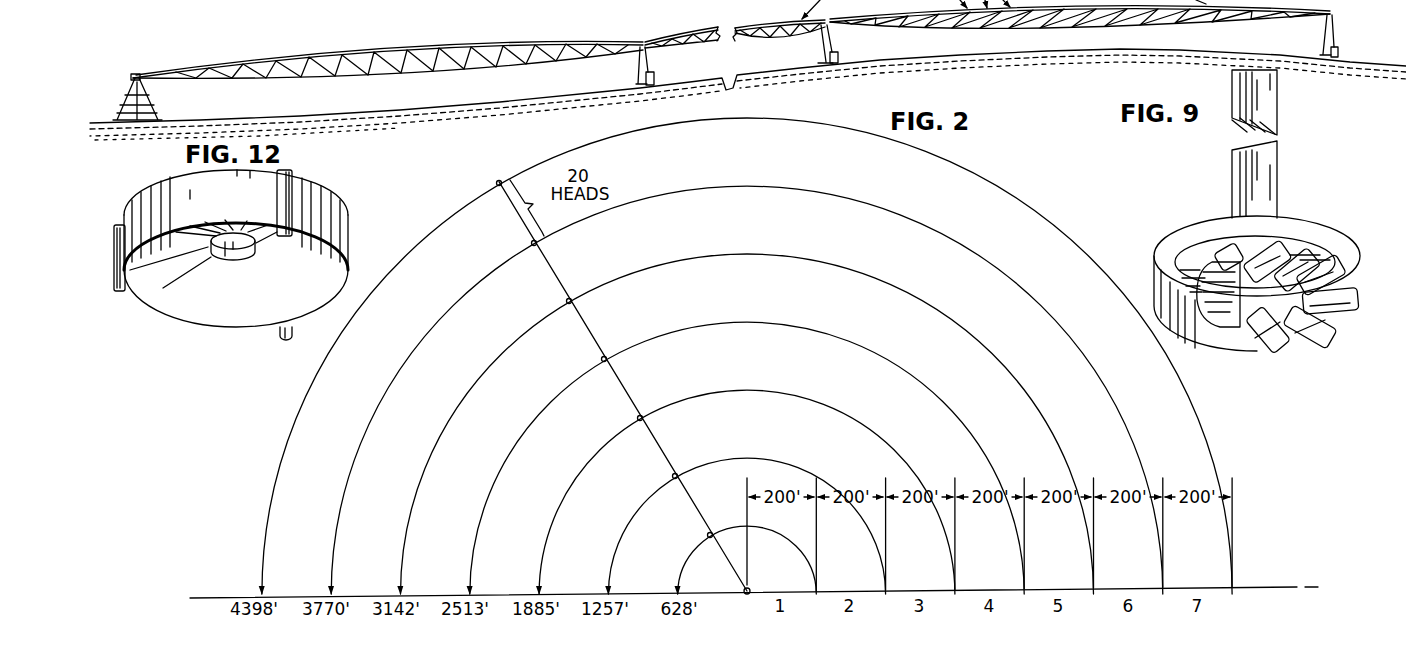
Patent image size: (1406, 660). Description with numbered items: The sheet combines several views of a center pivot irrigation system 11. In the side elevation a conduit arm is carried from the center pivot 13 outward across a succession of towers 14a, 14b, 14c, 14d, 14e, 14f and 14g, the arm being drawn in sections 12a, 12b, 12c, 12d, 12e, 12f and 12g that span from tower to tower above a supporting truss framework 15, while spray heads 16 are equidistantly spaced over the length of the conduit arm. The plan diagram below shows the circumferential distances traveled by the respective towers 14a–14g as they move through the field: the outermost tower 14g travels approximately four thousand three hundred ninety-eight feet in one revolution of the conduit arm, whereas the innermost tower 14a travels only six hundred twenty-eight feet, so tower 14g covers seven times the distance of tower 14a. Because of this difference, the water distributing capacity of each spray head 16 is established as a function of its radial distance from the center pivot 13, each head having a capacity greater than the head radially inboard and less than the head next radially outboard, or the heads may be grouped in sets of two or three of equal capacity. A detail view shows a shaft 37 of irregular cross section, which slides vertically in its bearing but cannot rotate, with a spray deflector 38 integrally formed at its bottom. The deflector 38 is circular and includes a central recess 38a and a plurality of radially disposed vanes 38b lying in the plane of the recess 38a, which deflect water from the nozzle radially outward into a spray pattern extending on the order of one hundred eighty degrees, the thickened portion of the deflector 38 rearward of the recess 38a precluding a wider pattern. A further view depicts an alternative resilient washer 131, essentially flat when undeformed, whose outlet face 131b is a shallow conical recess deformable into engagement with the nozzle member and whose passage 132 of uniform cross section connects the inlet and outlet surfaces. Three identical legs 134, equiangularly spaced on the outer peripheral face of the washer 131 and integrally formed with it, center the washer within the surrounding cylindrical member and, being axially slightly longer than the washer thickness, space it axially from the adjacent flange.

In FIG. 1, the irrigation system 11 is at (521, 8).
In FIG. 2, the irrigation system 11 is at (600, 337).
In FIG. 1, the first span section 12a is at (345, 52).
In FIG. 2, the first span section 12a is at (725, 554).
In FIG. 1, the second span section 12b is at (689, 33).
In FIG. 2, the second span section 12b is at (692, 509).
In FIG. 2, the third span section 12c is at (656, 448).
In FIG. 2, the fourth span section 12d is at (620, 389).
In FIG. 2, the fifth span section 12e is at (586, 331).
In FIG. 2, the sixth span section 12f is at (548, 271).
In FIG. 1, the seventh span section 12g is at (1080, 12).
In FIG. 2, the seventh span section 12g is at (512, 212).
In FIG. 1, the center pivot 13 is at (162, 101).
In FIG. 2, the center pivot 13 is at (752, 590).
In FIG. 1, the tower 14a is at (637, 71).
In FIG. 2, the tower 14a is at (716, 527).
In FIG. 2, the tower 14b is at (681, 476).
In FIG. 2, the tower 14c is at (647, 418).
In FIG. 2, the tower 14d is at (611, 360).
In FIG. 2, the tower 14e is at (576, 302).
In FIG. 1, the tower 14f is at (819, 54).
In FIG. 2, the tower 14f is at (541, 242).
In FIG. 1, the tower 14g is at (1322, 40).
In FIG. 2, the tower 14g is at (499, 181).
In FIG. 1, the truss structure 15 is at (374, 78).
In FIG. 1, the spray head 16 is at (455, 44).
In FIG. 9, the shaft 37 is at (1279, 139).
In FIG. 9, the spray deflector 38 is at (1262, 283).
In FIG. 9, the central recess 38a is at (1238, 330).
In FIG. 9, the vanes 38b is at (1348, 335).
In FIG. 12, the resilient washer 131 is at (348, 210).
In FIG. 12, the outlet face 131b is at (228, 326).
In FIG. 12, the passage 132 is at (238, 256).
In FIG. 12, the legs 134 is at (288, 190).